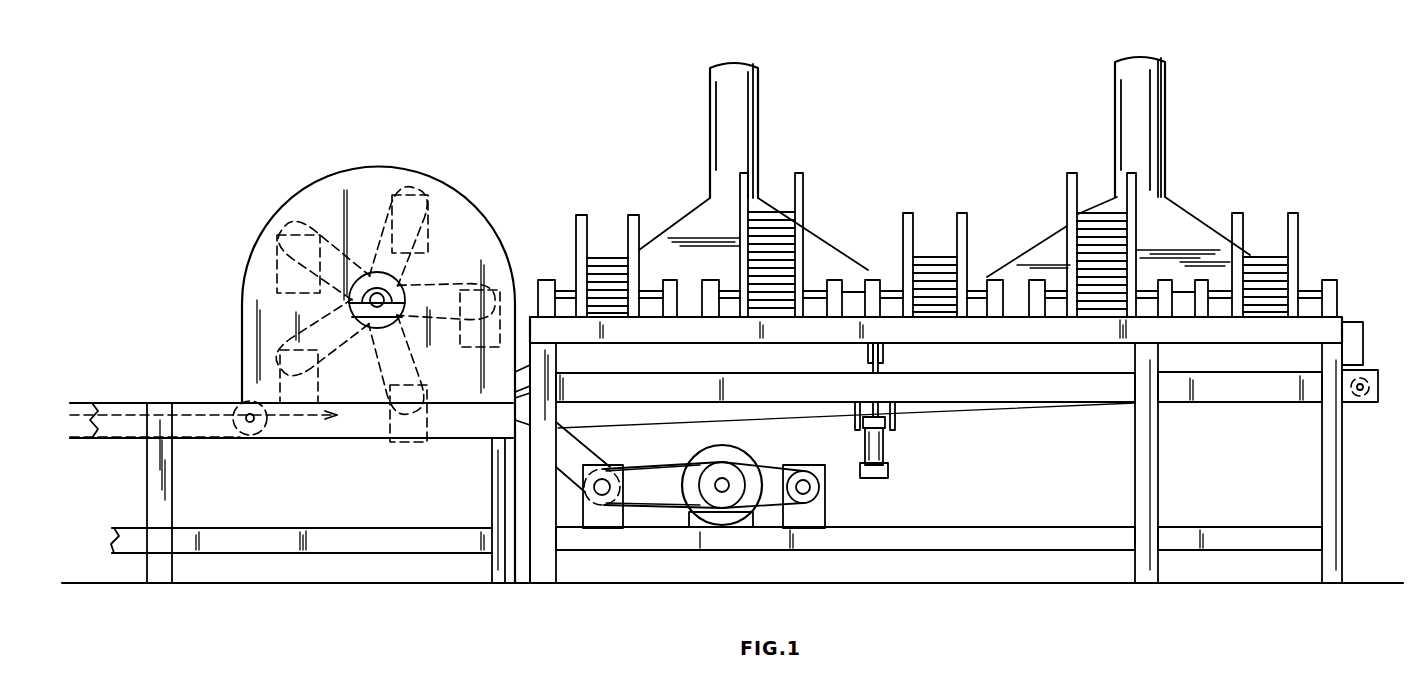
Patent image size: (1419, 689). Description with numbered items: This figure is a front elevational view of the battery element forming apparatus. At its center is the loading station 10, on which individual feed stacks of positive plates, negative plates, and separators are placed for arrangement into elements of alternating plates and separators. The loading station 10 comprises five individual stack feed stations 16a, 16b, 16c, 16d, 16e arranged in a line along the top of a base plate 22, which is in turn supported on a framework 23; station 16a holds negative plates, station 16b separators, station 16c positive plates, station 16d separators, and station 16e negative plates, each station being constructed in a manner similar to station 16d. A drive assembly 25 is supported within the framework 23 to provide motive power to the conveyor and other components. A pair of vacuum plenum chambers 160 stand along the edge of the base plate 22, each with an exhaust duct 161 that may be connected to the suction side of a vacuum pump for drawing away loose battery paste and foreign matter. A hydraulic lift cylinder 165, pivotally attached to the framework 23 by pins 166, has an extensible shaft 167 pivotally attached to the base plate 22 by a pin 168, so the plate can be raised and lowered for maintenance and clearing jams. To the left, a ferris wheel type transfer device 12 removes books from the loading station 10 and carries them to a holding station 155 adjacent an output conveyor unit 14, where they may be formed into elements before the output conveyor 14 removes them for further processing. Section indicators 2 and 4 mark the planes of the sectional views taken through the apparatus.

The loading station 10 is at (974, 82).
The ferris wheel type transfer device 12 is at (408, 157).
The output conveyor unit 14 is at (182, 390).
The holding station 155 is at (292, 400).
The stack feed station 16a is at (1266, 226).
The stack feed station 16b is at (1088, 186).
The stack feed station 16c is at (933, 222).
The stack feed station 16d is at (773, 181).
The stack feed station 16e is at (604, 212).
The vacuum plenum chamber 160 is at (820, 258).
The exhaust duct 161 is at (746, 103).
The base plate 22 is at (1324, 327).
The framework 23 is at (1343, 502).
The drive assembly 25 is at (764, 456).
The hydraulic lift cylinder 165 is at (888, 450).
The pins 166 is at (896, 420).
The extensible shaft 167 is at (884, 360).
The pin 168 is at (885, 350).
The section line 2- 2 is at (585, 118).
The section line 4- 4 is at (453, 485).